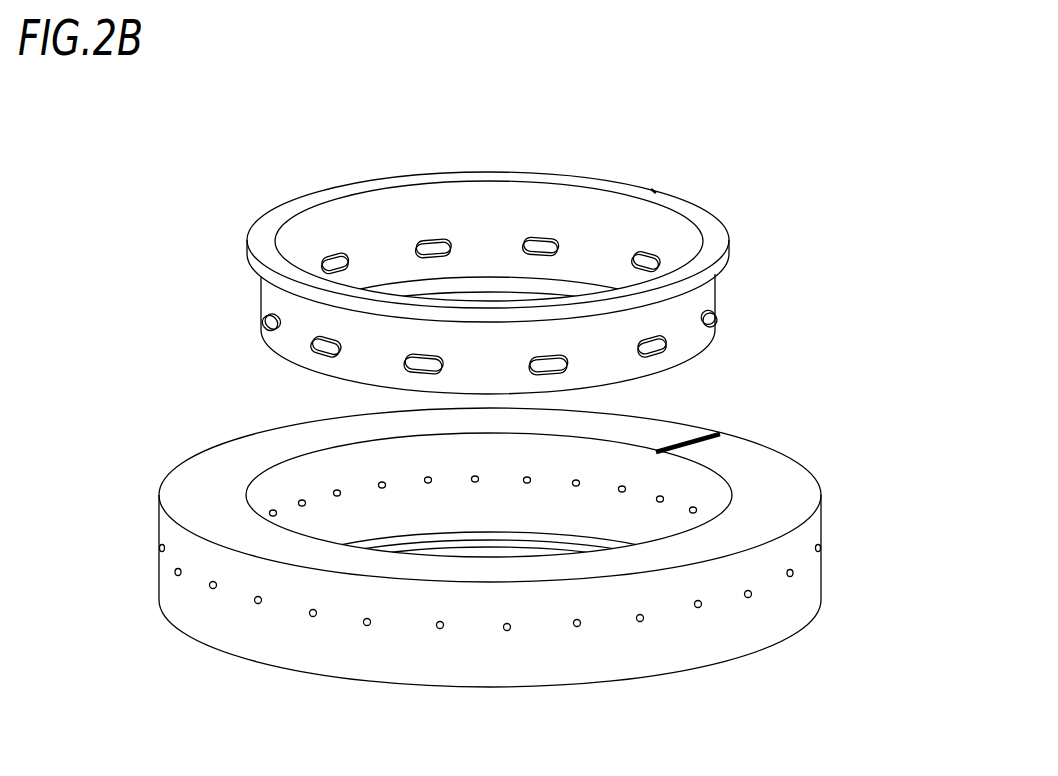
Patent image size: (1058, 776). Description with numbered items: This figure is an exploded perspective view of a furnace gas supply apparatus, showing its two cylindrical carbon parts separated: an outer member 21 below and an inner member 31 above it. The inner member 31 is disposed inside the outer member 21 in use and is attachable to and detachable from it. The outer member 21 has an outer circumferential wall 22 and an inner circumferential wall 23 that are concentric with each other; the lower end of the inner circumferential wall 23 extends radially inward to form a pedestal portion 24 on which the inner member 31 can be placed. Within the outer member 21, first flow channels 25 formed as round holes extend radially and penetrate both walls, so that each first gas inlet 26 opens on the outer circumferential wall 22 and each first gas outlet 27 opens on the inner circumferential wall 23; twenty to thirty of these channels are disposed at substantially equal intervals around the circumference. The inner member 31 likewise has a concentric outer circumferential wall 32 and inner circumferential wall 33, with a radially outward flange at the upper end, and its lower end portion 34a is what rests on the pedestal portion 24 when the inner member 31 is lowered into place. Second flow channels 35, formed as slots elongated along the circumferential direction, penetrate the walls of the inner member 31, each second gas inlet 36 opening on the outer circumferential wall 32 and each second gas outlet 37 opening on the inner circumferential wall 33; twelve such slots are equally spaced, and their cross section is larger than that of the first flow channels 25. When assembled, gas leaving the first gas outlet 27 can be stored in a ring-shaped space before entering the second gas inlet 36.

The outer member 21 is at (515, 577).
The outer circumferential wall 22 is at (262, 645).
The inner circumferential wall 23 is at (265, 493).
The pedestal portion 24 is at (370, 530).
The first flow channel 25 is at (579, 629).
The first gas inlet 26 is at (505, 633).
The first gas outlet 27 is at (690, 505).
The inner member 31 is at (486, 252).
The outer circumferential wall 32 is at (486, 348).
The inner circumferential wall 33 is at (318, 232).
The lower end portion 34a is at (298, 367).
The second flow channel 35 is at (672, 350).
The second gas inlet 36 is at (412, 370).
The second gas outlet 37 is at (545, 245).